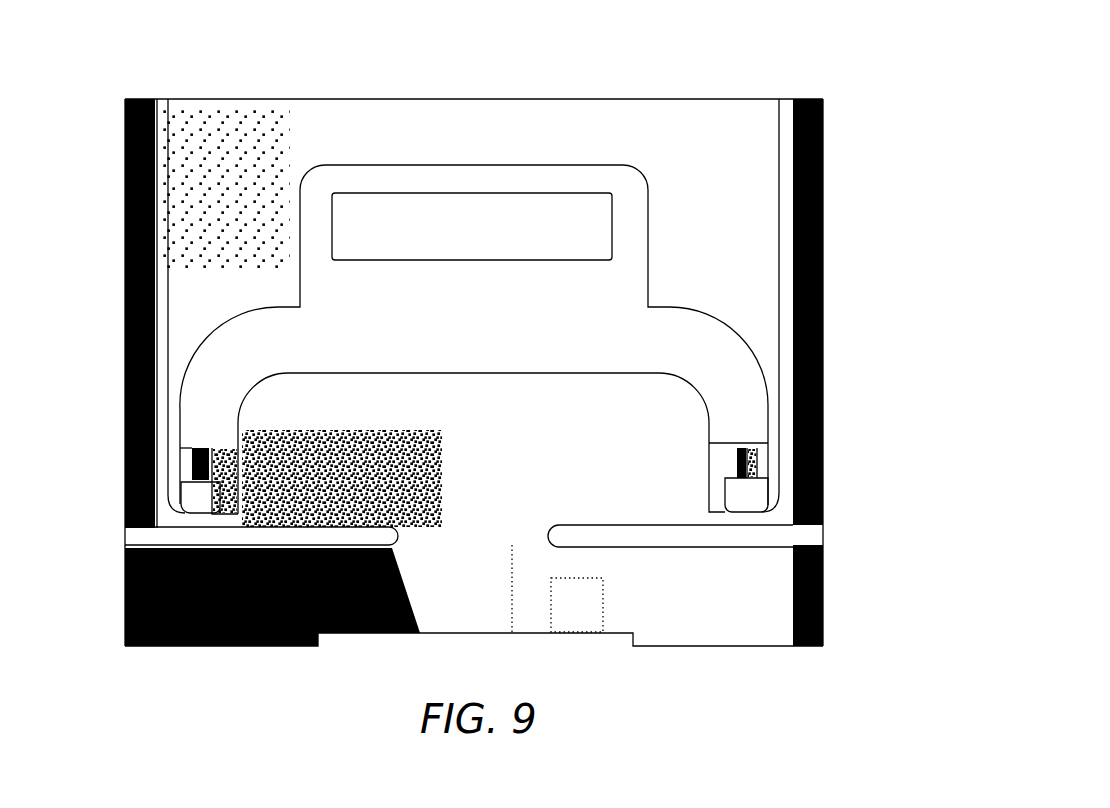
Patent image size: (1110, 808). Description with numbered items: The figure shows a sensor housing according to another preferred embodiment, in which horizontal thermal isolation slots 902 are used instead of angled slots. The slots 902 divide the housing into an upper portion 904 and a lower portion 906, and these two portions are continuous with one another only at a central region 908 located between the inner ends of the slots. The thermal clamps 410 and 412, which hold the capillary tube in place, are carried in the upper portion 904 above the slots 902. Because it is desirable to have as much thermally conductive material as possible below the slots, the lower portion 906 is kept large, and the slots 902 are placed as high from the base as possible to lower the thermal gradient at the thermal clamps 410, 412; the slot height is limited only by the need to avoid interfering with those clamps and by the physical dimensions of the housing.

The upper portion 904 is at (714, 109).
The horizontal thermal isolation slots 902 is at (143, 533).
The lower portion 906 is at (783, 636).
The central region 908 is at (488, 539).
The thermal clamp 410 is at (193, 490).
The thermal clamp 412 is at (758, 490).